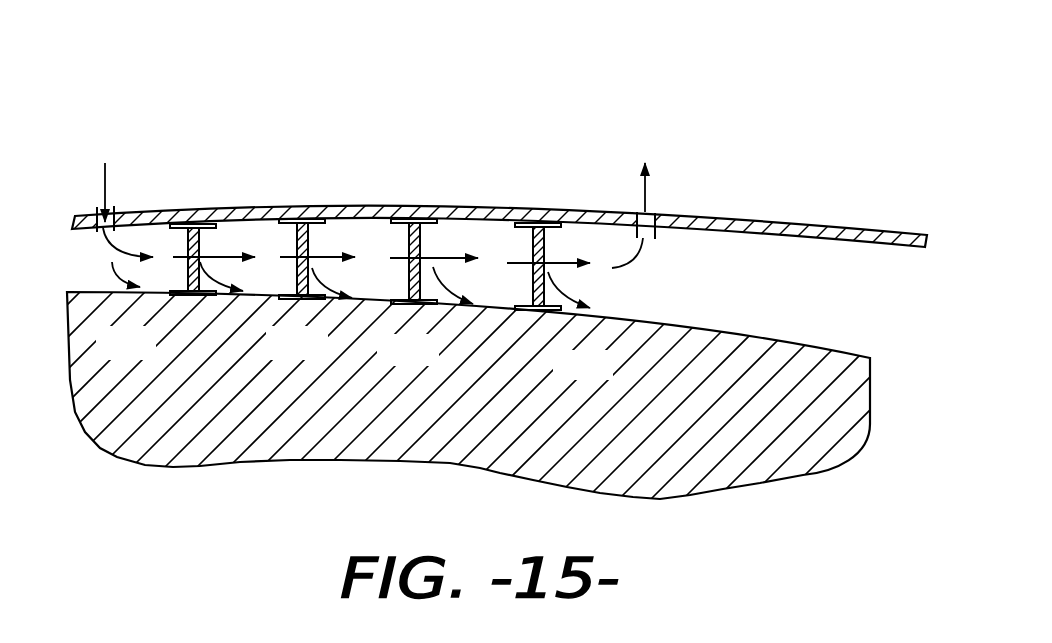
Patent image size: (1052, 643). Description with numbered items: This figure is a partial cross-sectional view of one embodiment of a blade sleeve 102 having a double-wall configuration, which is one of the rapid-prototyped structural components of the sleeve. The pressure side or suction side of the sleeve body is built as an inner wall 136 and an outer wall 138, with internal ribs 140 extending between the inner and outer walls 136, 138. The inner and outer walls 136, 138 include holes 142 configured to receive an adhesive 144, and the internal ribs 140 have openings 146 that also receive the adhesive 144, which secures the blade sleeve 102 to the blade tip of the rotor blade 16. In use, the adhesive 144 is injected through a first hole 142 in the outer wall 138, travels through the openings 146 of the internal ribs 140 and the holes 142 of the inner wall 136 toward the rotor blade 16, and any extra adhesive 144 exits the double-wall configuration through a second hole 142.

The rotor blade 16 is at (743, 342).
The blade sleeve 102 is at (197, 108).
The inner wall 136 is at (533, 310).
The outer wall 138 is at (517, 214).
The internal ribs 140 is at (185, 240).
The holes 142 is at (100, 216).
The adhesive 144 is at (112, 262).
The openings 146 is at (230, 228).